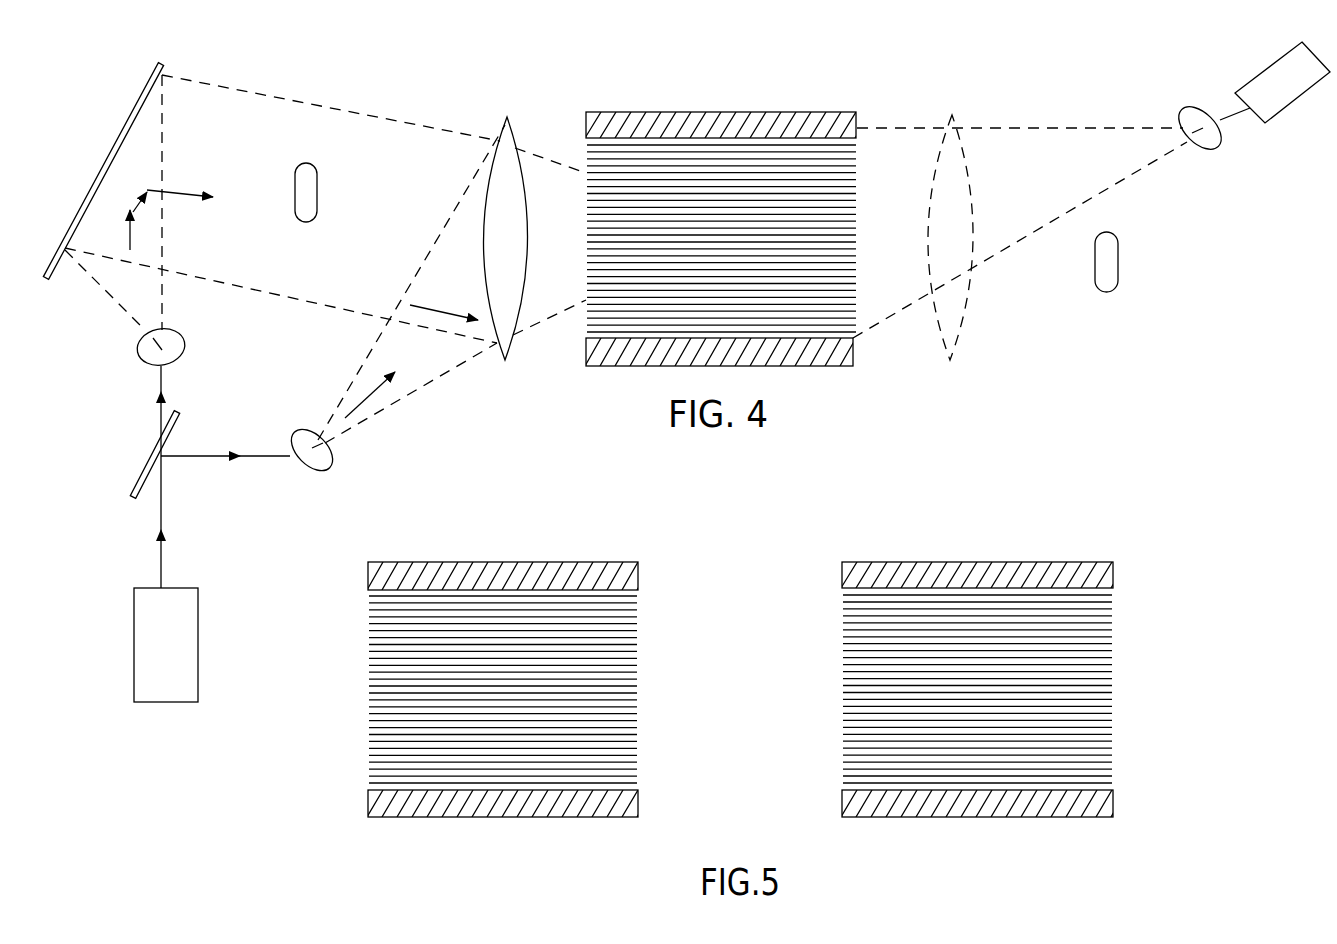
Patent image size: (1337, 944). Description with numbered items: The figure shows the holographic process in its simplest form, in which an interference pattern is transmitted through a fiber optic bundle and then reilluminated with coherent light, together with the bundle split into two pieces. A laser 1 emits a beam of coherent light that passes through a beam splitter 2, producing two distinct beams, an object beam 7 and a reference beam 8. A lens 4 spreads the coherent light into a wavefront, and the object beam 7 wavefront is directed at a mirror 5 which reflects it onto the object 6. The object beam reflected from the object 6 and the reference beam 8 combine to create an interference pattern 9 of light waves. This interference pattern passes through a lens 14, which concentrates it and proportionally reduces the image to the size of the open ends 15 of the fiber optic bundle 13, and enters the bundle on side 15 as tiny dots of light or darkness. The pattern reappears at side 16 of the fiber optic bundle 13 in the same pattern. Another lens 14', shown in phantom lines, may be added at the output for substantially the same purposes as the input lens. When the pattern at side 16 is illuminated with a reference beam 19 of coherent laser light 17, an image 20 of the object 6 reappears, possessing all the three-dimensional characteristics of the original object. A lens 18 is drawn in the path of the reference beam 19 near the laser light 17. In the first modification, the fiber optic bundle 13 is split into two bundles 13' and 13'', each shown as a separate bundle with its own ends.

In FIG. 4, the laser 1 is at (197, 590).
In FIG. 4, the beam splitter 2 is at (156, 448).
In FIG. 4, the lens 4 is at (310, 470).
In FIG. 4, the mirror 5 is at (113, 140).
In FIG. 4, the object 6 is at (310, 193).
In FIG. 4, the object beam 7 is at (242, 110).
In FIG. 4, the reference beam 8 is at (360, 380).
In FIG. 4, the interference pattern 9 is at (445, 327).
In FIG. 4, the fiber optic bundle 13 is at (741, 249).
In FIG. 5, the fiber optic bundle 13 is at (773, 647).
In FIG. 5, the bundle 13' is at (532, 689).
In FIG. 5, the bundle 13'' is at (1010, 689).
In FIG. 4, the lens 14 is at (474, 238).
In FIG. 4, the lens 14' is at (964, 215).
In FIG. 4, the open ends 15 is at (583, 318).
In FIG. 4, the side 16 is at (857, 185).
In FIG. 4, the coherent laser light 17 is at (1308, 96).
In FIG. 4, the lens 18 is at (1180, 112).
In FIG. 4, the reference beam 19 is at (1083, 138).
In FIG. 4, the image 20 is at (1110, 250).